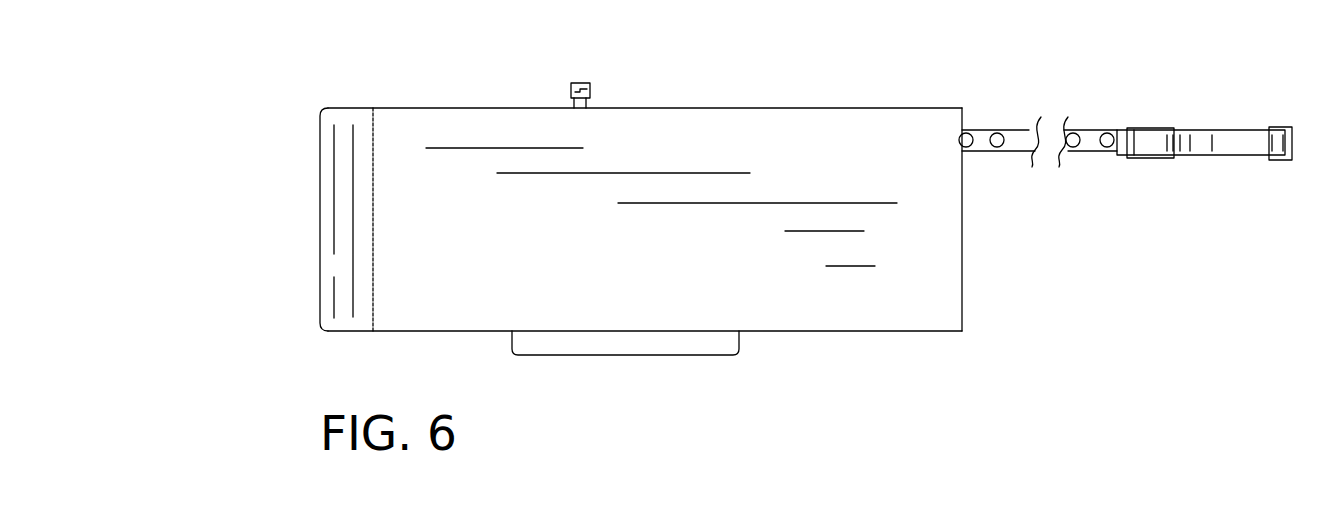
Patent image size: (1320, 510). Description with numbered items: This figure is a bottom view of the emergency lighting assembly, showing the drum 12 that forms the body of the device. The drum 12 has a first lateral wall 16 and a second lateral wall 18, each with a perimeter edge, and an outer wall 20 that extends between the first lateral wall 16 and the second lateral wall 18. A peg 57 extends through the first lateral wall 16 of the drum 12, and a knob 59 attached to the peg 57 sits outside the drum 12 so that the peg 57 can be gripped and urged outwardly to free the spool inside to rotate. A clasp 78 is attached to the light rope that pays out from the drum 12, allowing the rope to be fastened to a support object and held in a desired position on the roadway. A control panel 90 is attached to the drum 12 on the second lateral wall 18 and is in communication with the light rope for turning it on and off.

The drum 12 is at (400, 108).
The first lateral wall 16 is at (638, 108).
The second lateral wall 18 is at (811, 331).
The outer wall 20 is at (782, 148).
The peg 57 is at (571, 98).
The knob 59 is at (584, 83).
The clasp 78 is at (1243, 130).
The control panel 90 is at (739, 349).